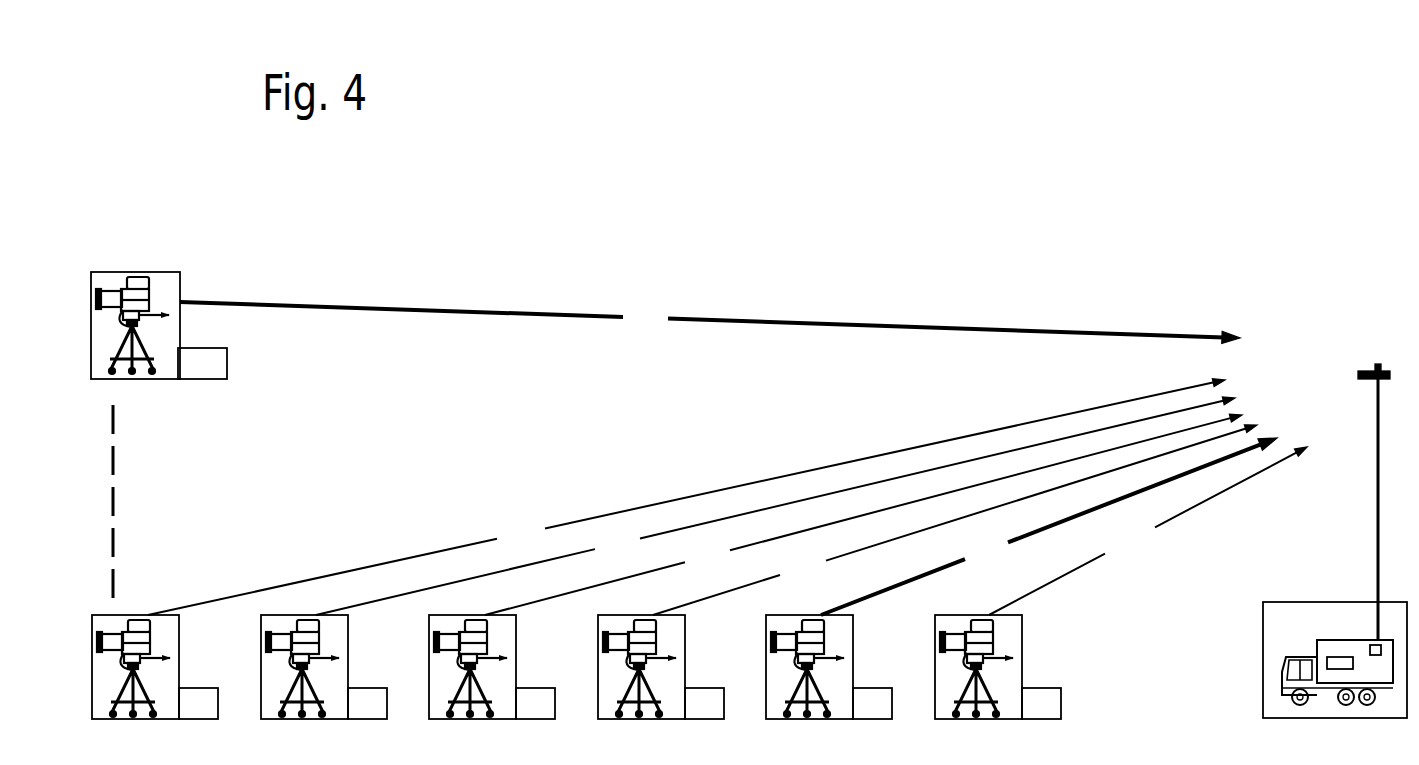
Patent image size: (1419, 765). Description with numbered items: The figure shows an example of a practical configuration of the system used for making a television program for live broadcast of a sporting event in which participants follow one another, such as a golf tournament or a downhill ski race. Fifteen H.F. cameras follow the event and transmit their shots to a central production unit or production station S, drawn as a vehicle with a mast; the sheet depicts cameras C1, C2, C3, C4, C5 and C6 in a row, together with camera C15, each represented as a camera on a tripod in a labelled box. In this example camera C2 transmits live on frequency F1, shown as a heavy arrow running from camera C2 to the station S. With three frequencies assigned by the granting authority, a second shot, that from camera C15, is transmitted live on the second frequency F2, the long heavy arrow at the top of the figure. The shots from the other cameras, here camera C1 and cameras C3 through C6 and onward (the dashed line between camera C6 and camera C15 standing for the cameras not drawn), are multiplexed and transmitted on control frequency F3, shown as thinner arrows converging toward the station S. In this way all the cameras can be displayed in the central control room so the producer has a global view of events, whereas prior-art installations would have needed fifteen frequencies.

The H.F. camera C15 is at (159, 326).
The H.F. camera C6 is at (155, 667).
The H.F. camera C5 is at (324, 667).
The H.F. camera C4 is at (492, 667).
The H.F. camera C3 is at (661, 667).
The H.F. camera C2 is at (829, 667).
The H.F. camera C1 is at (998, 667).
The first frequency F1 is at (1049, 526).
The second frequency F2 is at (710, 322).
The control frequency F3 is at (727, 497).
The production station S is at (1310, 612).